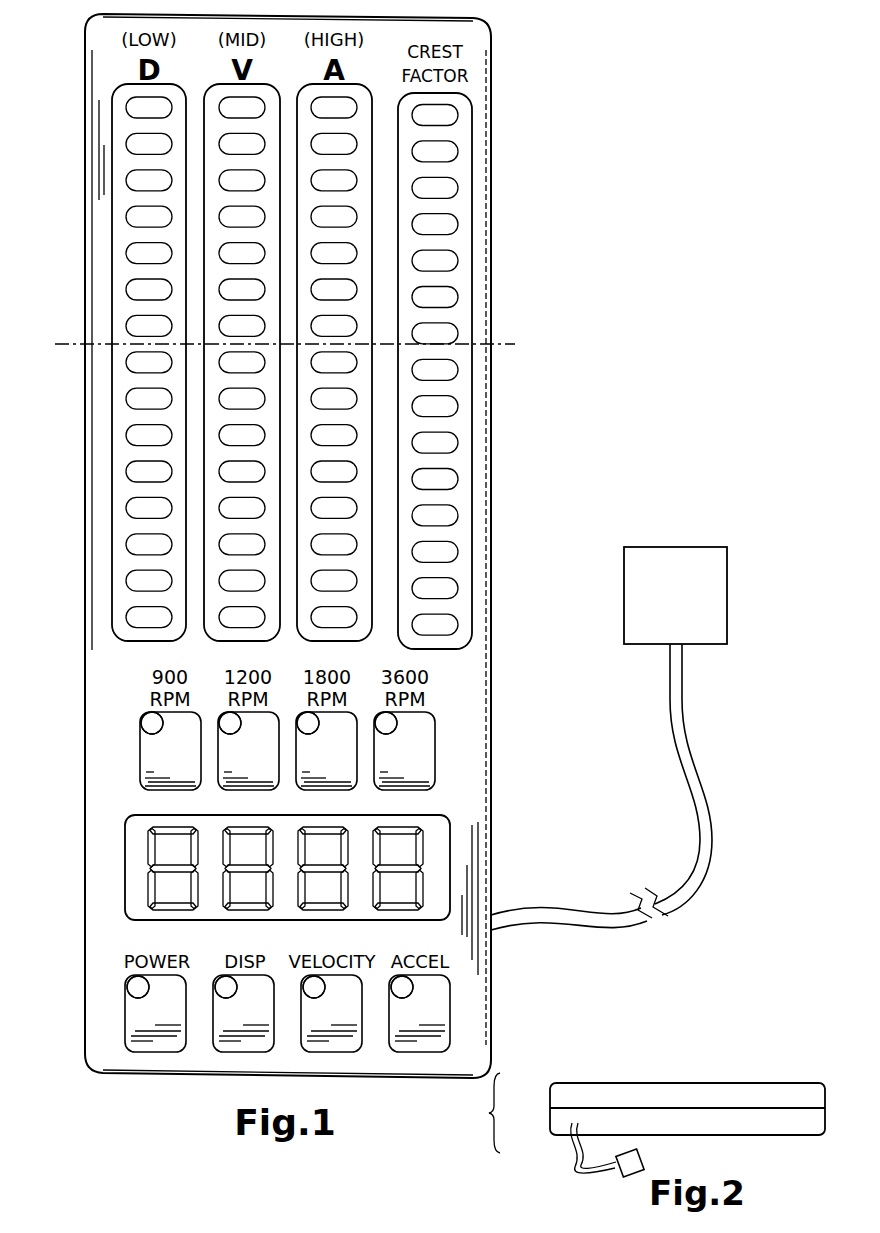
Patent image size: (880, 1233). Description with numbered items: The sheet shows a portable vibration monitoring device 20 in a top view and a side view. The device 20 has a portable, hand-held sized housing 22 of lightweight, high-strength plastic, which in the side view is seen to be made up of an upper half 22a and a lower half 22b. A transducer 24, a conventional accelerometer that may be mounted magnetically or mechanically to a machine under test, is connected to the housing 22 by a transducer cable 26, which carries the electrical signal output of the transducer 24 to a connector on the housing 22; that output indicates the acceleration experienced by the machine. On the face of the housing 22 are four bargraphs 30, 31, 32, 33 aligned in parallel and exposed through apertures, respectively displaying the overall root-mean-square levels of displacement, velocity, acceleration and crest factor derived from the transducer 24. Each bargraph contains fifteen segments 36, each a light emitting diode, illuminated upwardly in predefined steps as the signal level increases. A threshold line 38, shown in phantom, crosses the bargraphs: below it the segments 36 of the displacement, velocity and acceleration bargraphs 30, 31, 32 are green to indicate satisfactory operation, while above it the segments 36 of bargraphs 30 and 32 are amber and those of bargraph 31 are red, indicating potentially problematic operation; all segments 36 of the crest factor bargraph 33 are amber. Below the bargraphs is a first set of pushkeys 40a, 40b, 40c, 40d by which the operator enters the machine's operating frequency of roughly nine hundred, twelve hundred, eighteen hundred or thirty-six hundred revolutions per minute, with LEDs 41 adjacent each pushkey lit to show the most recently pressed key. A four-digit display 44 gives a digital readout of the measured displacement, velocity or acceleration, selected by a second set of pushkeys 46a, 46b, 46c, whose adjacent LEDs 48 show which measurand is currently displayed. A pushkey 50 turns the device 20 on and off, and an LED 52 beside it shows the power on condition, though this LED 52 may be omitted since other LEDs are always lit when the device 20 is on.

In FIG. 1, the vibration monitoring device 20 is at (63, 68).
In FIG. 2, the vibration monitoring device 20 is at (799, 1076).
In FIG. 1, the housing 22 is at (85, 697).
In FIG. 2, the housing 22 is at (484, 1113).
In FIG. 2, the upper half 22a is at (551, 1096).
In FIG. 2, the lower half 22b is at (551, 1122).
In FIG. 1, the transducer 24 is at (624, 622).
In FIG. 2, the transducer 24 is at (642, 1159).
In FIG. 1, the transducer cable 26 is at (700, 772).
In FIG. 2, the transducer cable 26 is at (575, 1176).
In FIG. 1, the bargraph 30 is at (112, 604).
In FIG. 1, the bargraph 31 is at (238, 641).
In FIG. 1, the bargraph 32 is at (335, 641).
In FIG. 1, the bargraph 33 is at (440, 649).
In FIG. 1, the segment 36 is at (126, 143).
In FIG. 1, the threshold line 38 is at (69, 344).
In FIG. 1, the pushkey 40a is at (140, 766).
In FIG. 1, the pushkey 40b is at (226, 790).
In FIG. 1, the pushkey 40c is at (304, 790).
In FIG. 1, the pushkey 40d is at (382, 790).
In FIG. 1, the LED 41 is at (163, 725).
In FIG. 1, the four-digit display 44 is at (125, 866).
In FIG. 1, the pushkey 46a is at (240, 1052).
In FIG. 1, the pushkey 46b is at (326, 1052).
In FIG. 1, the pushkey 46c is at (418, 1052).
In FIG. 1, the LED 48 is at (220, 978).
In FIG. 1, the pushkey 50 is at (151, 1052).
In FIG. 1, the LED 52 is at (127, 985).